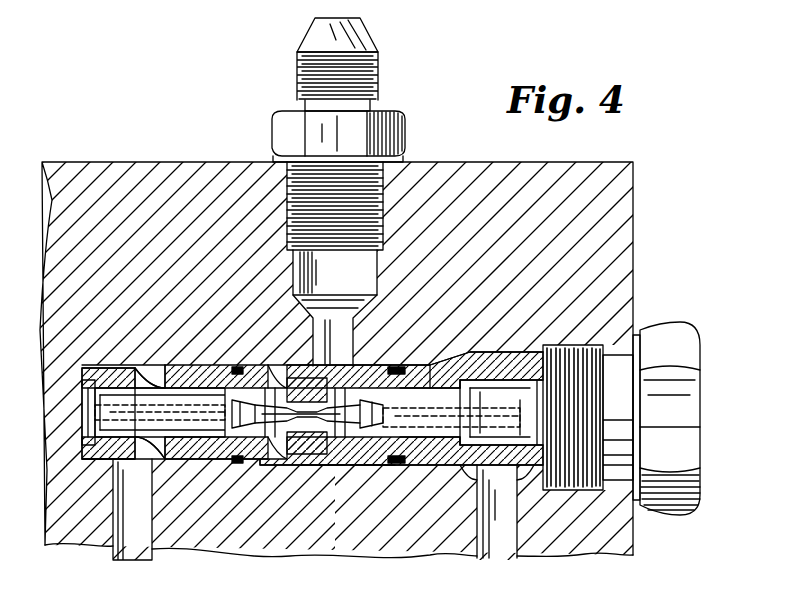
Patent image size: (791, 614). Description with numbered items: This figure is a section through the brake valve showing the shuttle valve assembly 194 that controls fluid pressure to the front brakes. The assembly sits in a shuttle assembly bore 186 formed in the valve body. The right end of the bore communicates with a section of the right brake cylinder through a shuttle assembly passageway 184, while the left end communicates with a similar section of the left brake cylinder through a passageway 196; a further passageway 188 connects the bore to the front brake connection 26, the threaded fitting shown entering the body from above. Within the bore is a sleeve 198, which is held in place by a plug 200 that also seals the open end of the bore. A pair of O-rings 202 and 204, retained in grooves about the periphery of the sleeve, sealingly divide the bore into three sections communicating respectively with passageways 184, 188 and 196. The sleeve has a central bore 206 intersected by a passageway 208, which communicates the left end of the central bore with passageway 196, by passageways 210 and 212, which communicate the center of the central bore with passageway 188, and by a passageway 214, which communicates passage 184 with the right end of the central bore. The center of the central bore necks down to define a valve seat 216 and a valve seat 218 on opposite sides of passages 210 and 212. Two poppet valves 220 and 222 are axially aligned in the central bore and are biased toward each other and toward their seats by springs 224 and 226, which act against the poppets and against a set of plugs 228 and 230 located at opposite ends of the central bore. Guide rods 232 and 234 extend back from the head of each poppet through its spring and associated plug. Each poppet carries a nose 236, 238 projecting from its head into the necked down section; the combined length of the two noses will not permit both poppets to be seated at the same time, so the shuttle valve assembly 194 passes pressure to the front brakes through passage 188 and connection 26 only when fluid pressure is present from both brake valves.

The front brake connection 26 is at (360, 22).
The shuttle assembly passageway 184 is at (492, 540).
The shuttle assembly bore 186 is at (327, 468).
The passageway 188 is at (296, 276).
The shuttle valve assembly 194 is at (392, 352).
The passageway 196 is at (116, 560).
The sleeve 198 is at (373, 468).
The plug 200 is at (674, 322).
The O-ring 202 is at (232, 460).
The O-ring 204 is at (402, 366).
The central bore 206 is at (436, 468).
The passageway 208 is at (150, 365).
The passageway 210 is at (280, 364).
The passageway 212 is at (358, 365).
The passageway 214 is at (470, 480).
The valve seat 216 is at (234, 463).
The valve seat 218 is at (394, 466).
The poppet valve 220 is at (220, 365).
The poppet valve 222 is at (426, 365).
The spring 224 is at (193, 460).
The spring 226 is at (532, 497).
The plug 228 is at (88, 460).
The plug 230 is at (548, 493).
The guide rod 232 is at (190, 365).
The guide rod 234 is at (485, 378).
The nose 236 is at (294, 465).
The nose 238 is at (348, 466).